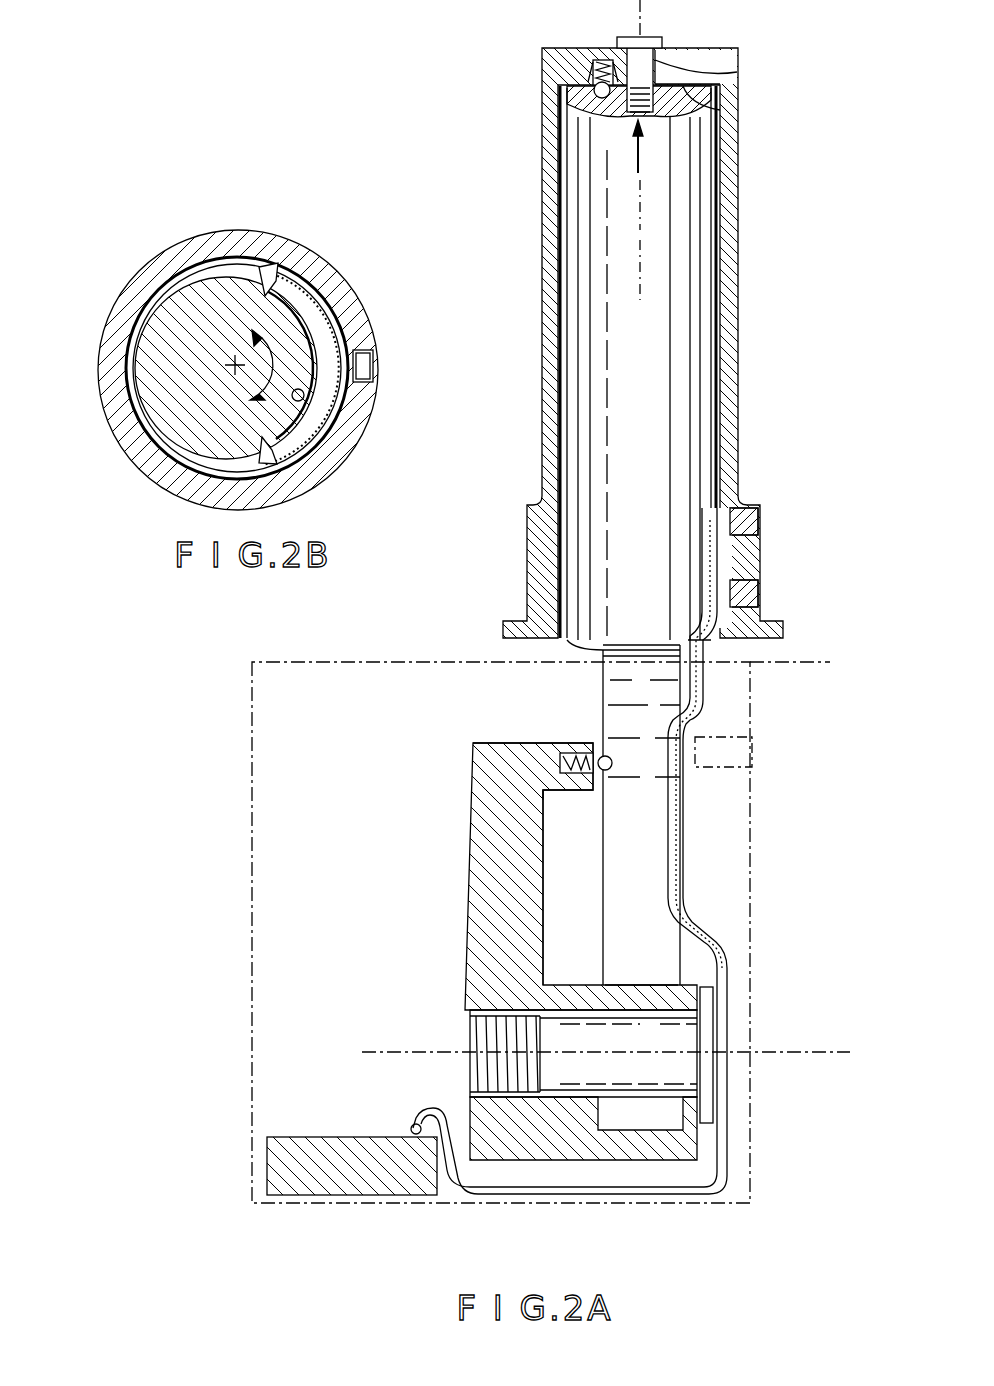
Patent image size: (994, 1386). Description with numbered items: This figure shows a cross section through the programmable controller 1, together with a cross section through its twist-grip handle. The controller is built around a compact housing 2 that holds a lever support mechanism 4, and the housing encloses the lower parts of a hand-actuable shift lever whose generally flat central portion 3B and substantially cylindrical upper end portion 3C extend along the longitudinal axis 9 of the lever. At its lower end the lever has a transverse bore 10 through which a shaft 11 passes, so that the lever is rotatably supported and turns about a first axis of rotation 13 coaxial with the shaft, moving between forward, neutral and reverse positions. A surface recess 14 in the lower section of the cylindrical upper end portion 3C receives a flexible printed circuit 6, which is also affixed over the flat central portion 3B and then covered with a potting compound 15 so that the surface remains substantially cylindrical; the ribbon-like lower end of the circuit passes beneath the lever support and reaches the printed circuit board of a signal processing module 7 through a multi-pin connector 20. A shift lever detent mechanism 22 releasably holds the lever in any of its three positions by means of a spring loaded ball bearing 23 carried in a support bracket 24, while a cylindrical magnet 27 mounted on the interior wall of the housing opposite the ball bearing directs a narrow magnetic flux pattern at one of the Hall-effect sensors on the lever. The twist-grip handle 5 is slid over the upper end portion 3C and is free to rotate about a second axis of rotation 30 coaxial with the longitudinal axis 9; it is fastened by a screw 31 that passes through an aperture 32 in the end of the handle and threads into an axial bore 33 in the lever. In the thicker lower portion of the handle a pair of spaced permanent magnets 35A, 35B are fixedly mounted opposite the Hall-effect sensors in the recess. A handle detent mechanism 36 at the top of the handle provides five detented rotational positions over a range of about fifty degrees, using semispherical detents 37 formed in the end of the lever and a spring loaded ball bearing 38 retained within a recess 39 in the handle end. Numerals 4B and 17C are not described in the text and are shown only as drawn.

In FIG. 2A, the programmable controller 1 is at (793, 873).
In FIG. 2A, the compact housing 2 is at (252, 800).
In FIG. 2A, the central portion 3B is at (640, 850).
In FIG. 2A, the upper end portion 3C is at (597, 280).
In FIG. 2B, the upper end portion 3C is at (162, 323).
In FIG. 2A, the lever support mechanism 4 is at (480, 960).
In FIG. 2A, the lower housing block 4B is at (515, 1140).
In FIG. 2A, the handle 5 is at (740, 338).
In FIG. 2B, the handle 5 is at (297, 243).
In FIG. 2A, the flexible printed circuit 6 is at (700, 677).
In FIG. 2A, the signal processing module 7 is at (325, 1148).
In FIG. 2A, the longitudinal axis 9 is at (697, 213).
In FIG. 2B, the longitudinal axis 9 is at (233, 367).
In FIG. 2A, the transverse bore 10 is at (720, 957).
In FIG. 2A, the shaft 11 is at (645, 1042).
In FIG. 2A, the first axis of rotation 13 is at (803, 1050).
In FIG. 2A, the surface recess 14 is at (707, 520).
In FIG. 2B, the surface recess 14 is at (304, 393).
In FIG. 2A, the potting compound 15 is at (722, 553).
In FIG. 2B, the potting compound 15 is at (364, 351).
In FIG. 2A, the cover 17C is at (453, 1162).
In FIG. 2A, the multi-pin connector 20 is at (413, 1128).
In FIG. 2A, the shift lever detent mechanism 22 is at (442, 805).
In FIG. 2A, the spring loaded ball bearing 23 is at (603, 756).
In FIG. 2A, the support bracket 24 is at (473, 757).
In FIG. 2A, the magnet 27 is at (727, 752).
In FIG. 2A, the second axis of rotation 30 is at (637, 160).
In FIG. 2A, the screw 31 is at (648, 37).
In FIG. 2A, the aperture 32 is at (677, 70).
In FIG. 2A, the axial bore 33 is at (637, 122).
In FIG. 2A, the permanent magnet 35A is at (745, 518).
In FIG. 2A, the permanent magnet 35B is at (747, 592).
In FIG. 2B, the permanent magnet 35B is at (374, 366).
In FIG. 2A, the handle detent mechanism 36 is at (493, 83).
In FIG. 2A, the semispherical detents 37 is at (690, 118).
In FIG. 2A, the spring loaded ball bearing 38 is at (596, 84).
In FIG. 2A, the recess 39 is at (593, 63).